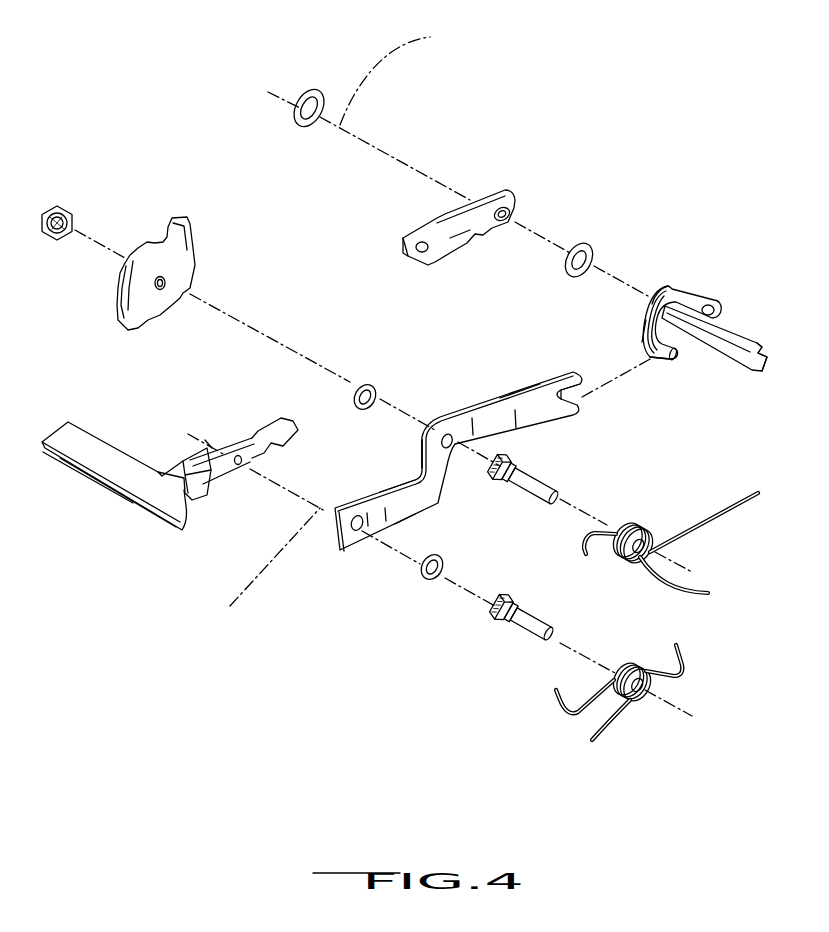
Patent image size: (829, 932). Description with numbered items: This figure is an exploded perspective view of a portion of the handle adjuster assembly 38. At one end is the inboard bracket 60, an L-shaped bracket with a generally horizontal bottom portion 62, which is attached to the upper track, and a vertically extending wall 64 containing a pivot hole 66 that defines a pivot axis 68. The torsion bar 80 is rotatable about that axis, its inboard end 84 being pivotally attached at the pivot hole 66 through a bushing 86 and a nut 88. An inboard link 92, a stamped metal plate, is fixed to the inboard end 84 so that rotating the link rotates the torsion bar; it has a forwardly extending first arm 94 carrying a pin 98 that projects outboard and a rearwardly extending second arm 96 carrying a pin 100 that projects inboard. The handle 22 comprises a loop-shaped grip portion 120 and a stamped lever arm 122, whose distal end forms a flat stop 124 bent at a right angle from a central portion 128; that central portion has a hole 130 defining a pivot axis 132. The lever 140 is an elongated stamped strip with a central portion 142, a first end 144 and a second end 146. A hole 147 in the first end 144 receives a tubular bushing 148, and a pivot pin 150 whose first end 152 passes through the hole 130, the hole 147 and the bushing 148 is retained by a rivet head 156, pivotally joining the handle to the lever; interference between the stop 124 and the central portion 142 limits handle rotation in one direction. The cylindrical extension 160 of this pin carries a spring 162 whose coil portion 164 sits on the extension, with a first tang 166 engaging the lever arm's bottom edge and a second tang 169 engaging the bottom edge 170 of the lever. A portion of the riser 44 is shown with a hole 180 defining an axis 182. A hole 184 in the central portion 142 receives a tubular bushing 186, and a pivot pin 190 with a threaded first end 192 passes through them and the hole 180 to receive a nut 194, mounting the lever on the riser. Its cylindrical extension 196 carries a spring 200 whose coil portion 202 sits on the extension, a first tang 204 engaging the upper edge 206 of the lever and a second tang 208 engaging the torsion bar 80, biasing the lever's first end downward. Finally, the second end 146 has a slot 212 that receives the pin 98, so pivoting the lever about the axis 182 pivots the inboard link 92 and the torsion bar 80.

The handle adjuster assembly 38 is at (187, 80).
The handle 22 is at (83, 423).
The riser 44 is at (168, 220).
The inboard bracket 60 is at (467, 203).
The bottom portion 62 is at (435, 222).
The wall 64 is at (462, 232).
The pivot hole 66 is at (517, 203).
The pivot axis 68 is at (406, 74).
The torsion bar 80 is at (727, 368).
The inboard end 84 is at (717, 340).
The bushing 86 is at (579, 245).
The nut 88 is at (313, 90).
The inboard link 92 is at (695, 292).
The first arm 94 is at (648, 322).
The second arm 96 is at (716, 298).
The pin 98 is at (662, 360).
The pin 100 is at (678, 288).
The grip portion 120 is at (147, 518).
The lever arm 122 is at (238, 440).
The stop 124 is at (294, 418).
The central portion 128 is at (213, 425).
The hole 130 is at (237, 470).
The pivot axis 132 is at (255, 569).
The lever 140 is at (467, 402).
The central portion 142 is at (422, 476).
The first end 144 is at (360, 503).
The second end 146 is at (535, 380).
The hole 147 is at (338, 553).
The tubular bushing 148 is at (426, 580).
The pivot pin 150 is at (514, 650).
The first end 152 is at (508, 617).
The rivet head 156 is at (504, 600).
The cylindrical extension 160 is at (548, 627).
The spring 162 is at (632, 686).
The coil portion 164 is at (627, 702).
The first tang 166 is at (557, 707).
The second tang 169 is at (684, 662).
The bottom edge 170 is at (404, 527).
The hole 180 is at (153, 286).
The axis 182 is at (234, 322).
The hole 184 is at (450, 450).
The tubular bushing 186 is at (366, 386).
The pivot pin 190 is at (570, 478).
The first end 192 is at (508, 466).
The nut 194 is at (58, 207).
The cylindrical extension 196 is at (563, 496).
The spring 200 is at (695, 578).
The coil portion 202 is at (644, 521).
The first tang 204 is at (582, 538).
The upper edge 206 is at (418, 440).
The second tang 208 is at (752, 490).
The slot 212 is at (590, 383).